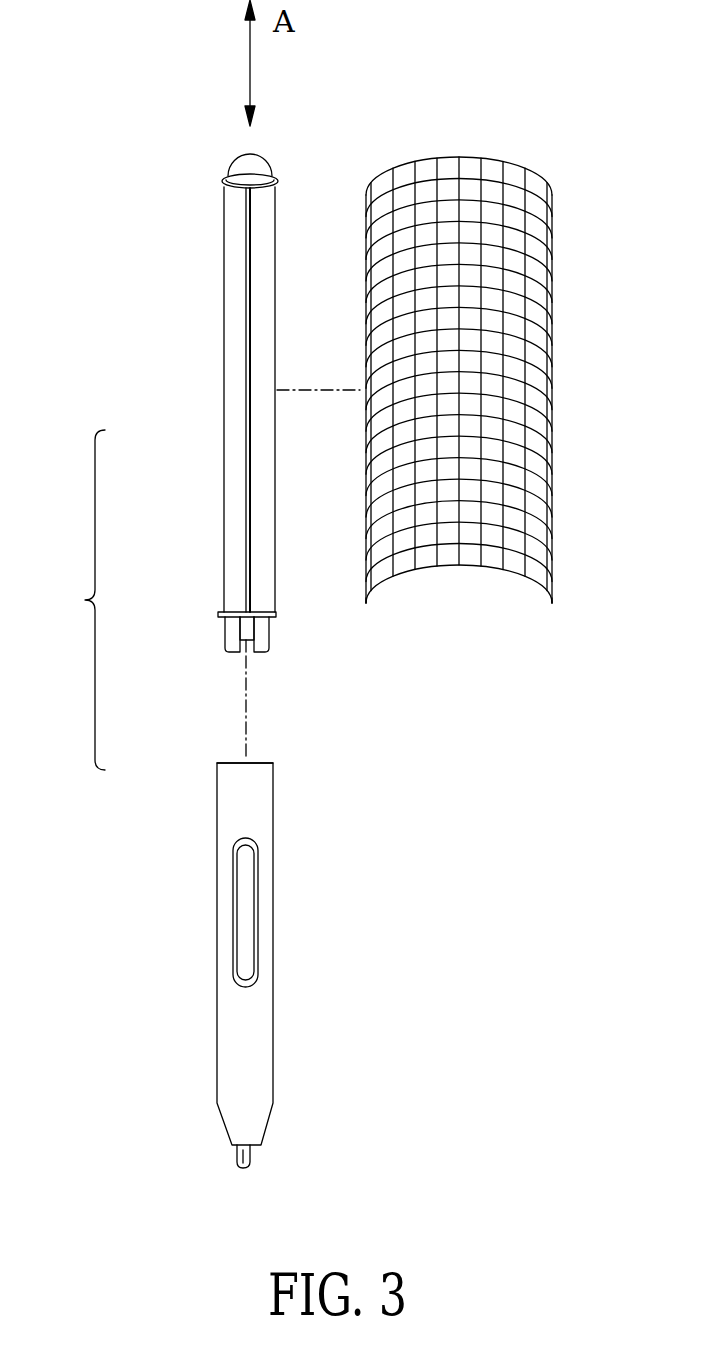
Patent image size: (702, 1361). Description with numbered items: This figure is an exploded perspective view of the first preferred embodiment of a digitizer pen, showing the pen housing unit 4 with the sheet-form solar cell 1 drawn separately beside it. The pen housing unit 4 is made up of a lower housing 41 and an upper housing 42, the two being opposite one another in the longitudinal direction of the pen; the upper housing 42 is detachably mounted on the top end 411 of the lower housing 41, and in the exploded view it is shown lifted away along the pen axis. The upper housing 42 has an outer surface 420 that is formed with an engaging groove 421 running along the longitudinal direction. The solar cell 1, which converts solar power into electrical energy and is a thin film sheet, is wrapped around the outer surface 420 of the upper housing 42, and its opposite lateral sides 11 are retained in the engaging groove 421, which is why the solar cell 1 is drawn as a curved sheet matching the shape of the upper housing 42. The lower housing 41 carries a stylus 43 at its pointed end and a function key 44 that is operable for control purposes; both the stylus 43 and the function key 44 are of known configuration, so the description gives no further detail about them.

The solar cell 1 is at (464, 157).
The lateral sides 11 is at (366, 601).
The pen housing unit 4 is at (81, 600).
The lower housing 41 is at (203, 789).
The top end 411 is at (260, 762).
The upper housing 42 is at (245, 400).
The outer surface 420 is at (265, 275).
The engaging groove 421 is at (248, 360).
The stylus 43 is at (250, 1157).
The function key 44 is at (246, 886).